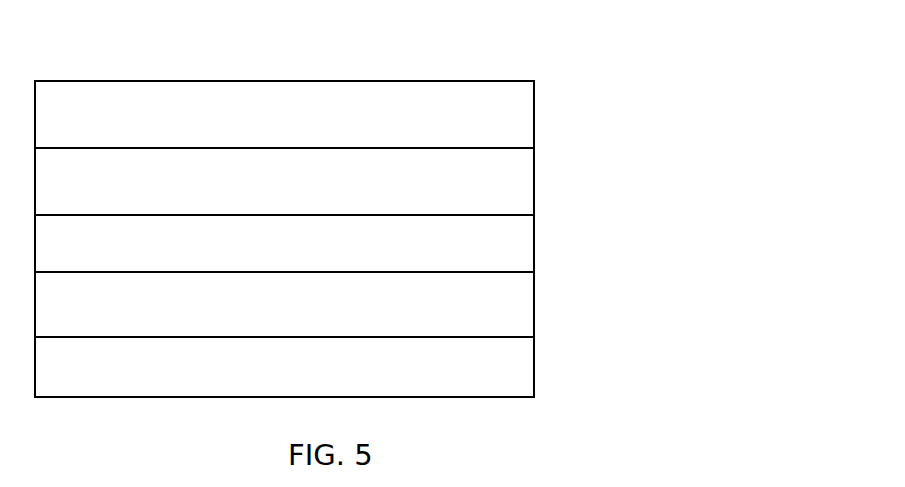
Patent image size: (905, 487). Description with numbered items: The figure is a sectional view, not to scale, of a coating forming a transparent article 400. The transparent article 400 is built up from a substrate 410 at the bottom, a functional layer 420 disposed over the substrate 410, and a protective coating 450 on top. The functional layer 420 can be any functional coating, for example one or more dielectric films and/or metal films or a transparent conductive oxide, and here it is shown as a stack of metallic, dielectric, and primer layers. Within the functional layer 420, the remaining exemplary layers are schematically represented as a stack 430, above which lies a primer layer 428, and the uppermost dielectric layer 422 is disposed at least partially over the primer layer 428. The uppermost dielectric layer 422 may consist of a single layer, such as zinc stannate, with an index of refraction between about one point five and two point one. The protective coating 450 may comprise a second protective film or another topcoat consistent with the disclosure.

The transparent article 400 is at (500, 59).
The protective coating 450 is at (284, 114).
The uppermost dielectric layer 422 is at (284, 181).
The primer layer 428 is at (284, 243).
The stack 430 is at (284, 304).
The substrate 410 is at (284, 367).
The functional layer 420 is at (545, 153).